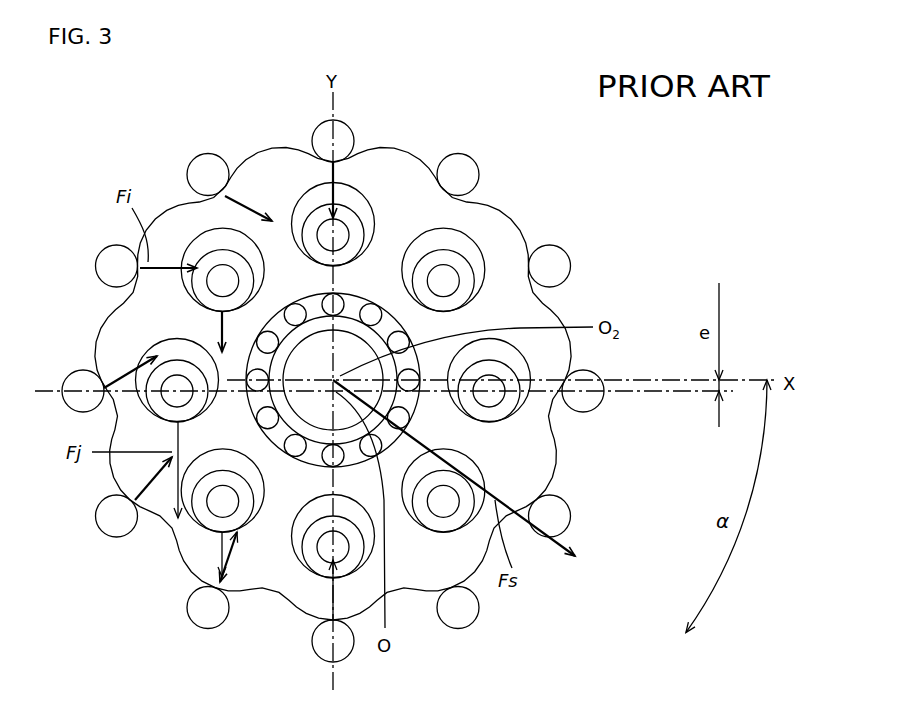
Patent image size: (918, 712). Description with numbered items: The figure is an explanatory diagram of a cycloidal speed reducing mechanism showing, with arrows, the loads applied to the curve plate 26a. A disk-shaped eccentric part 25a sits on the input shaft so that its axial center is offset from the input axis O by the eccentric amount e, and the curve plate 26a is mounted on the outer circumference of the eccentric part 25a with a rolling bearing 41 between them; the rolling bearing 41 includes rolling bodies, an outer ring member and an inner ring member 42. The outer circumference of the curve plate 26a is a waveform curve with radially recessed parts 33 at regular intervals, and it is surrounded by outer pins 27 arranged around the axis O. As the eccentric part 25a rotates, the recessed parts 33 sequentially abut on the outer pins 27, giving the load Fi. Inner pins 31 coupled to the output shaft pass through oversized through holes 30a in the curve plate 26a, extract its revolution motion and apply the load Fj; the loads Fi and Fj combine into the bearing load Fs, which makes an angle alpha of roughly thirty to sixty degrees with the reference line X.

The outer pin 27 is at (205, 162).
The curve plate 26a is at (333, 364).
The recessed waveform part 33 is at (168, 527).
The through hole 30a is at (150, 354).
The inner pin 31 is at (214, 262).
The eccentric part 25a is at (382, 313).
The inner ring member 42 is at (372, 318).
The rolling bearing 41 is at (350, 350).